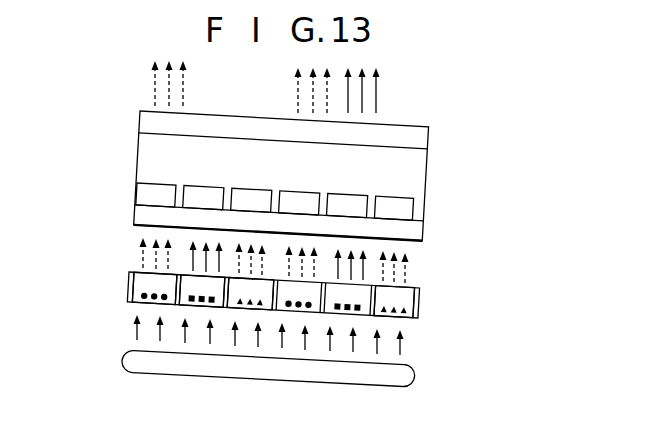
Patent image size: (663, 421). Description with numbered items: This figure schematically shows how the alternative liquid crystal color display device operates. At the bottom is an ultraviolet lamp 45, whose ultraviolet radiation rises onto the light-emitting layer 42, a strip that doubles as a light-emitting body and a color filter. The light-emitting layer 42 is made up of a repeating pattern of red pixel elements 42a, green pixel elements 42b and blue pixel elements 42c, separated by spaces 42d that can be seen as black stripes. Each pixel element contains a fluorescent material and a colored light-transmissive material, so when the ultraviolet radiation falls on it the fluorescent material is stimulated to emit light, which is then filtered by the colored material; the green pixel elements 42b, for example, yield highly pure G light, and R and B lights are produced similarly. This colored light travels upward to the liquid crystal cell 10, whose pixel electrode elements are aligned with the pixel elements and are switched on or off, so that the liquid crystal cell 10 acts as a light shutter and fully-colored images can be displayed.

The liquid crystal cell 10 is at (457, 117).
The light-emitting layer 42 is at (421, 303).
The red pixel elements 42a is at (147, 302).
The green pixel elements 42b is at (190, 306).
The blue pixel elements 42c is at (240, 307).
The spaces 42d is at (378, 317).
The ultraviolet lamp 45 is at (418, 378).